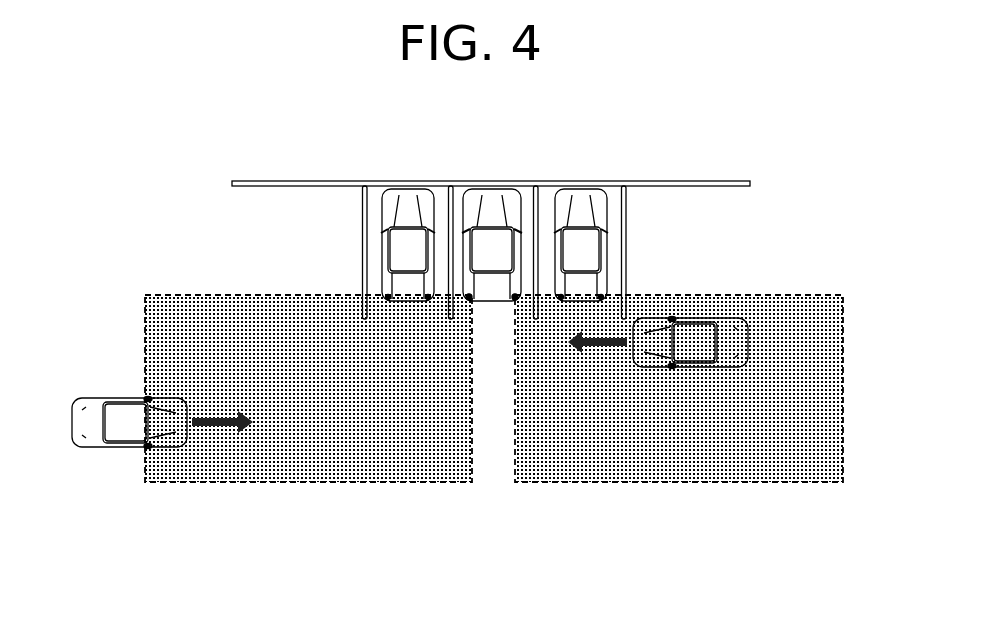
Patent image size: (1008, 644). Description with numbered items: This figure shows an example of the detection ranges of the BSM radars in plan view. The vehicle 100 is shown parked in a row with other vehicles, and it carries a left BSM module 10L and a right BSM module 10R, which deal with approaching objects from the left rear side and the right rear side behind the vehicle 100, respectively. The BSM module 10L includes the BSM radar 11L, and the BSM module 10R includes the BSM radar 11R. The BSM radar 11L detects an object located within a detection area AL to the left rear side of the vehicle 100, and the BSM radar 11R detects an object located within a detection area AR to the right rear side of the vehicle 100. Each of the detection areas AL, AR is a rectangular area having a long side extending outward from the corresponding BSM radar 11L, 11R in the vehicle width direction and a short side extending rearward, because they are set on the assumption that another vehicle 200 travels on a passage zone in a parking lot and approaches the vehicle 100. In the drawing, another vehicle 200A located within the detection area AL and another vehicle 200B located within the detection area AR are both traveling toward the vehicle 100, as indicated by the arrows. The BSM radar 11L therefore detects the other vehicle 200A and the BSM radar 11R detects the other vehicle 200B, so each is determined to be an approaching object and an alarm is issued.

The vehicle 100 is at (492, 189).
The BSM module 10L is at (400, 216).
The BSM radar 11L is at (469, 300).
The BSM module 10R is at (587, 216).
The BSM radar 11R is at (520, 300).
The other vehicle 200 is at (437, 385).
The other vehicle 200A is at (125, 448).
The other vehicle 200B is at (697, 318).
The detection area AL is at (305, 483).
The detection area AR is at (677, 483).